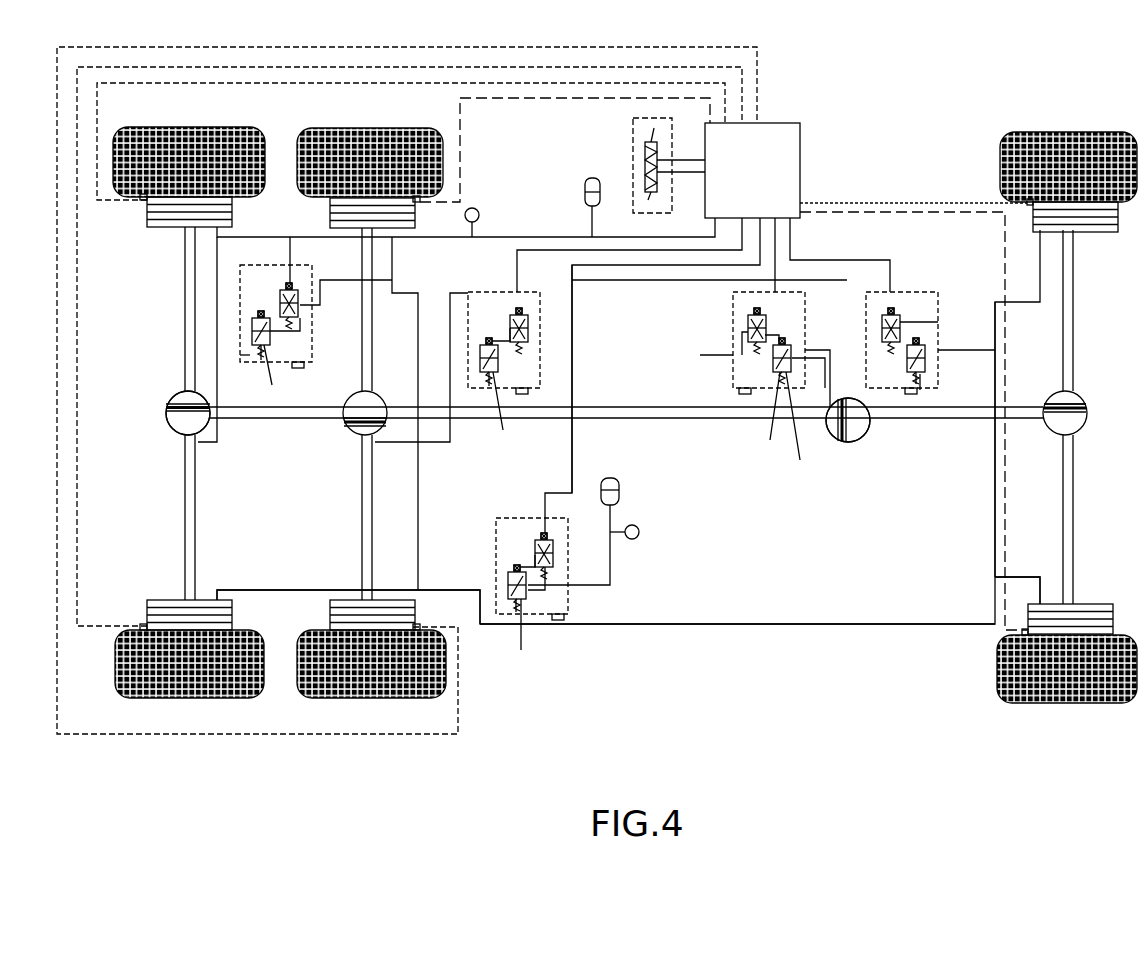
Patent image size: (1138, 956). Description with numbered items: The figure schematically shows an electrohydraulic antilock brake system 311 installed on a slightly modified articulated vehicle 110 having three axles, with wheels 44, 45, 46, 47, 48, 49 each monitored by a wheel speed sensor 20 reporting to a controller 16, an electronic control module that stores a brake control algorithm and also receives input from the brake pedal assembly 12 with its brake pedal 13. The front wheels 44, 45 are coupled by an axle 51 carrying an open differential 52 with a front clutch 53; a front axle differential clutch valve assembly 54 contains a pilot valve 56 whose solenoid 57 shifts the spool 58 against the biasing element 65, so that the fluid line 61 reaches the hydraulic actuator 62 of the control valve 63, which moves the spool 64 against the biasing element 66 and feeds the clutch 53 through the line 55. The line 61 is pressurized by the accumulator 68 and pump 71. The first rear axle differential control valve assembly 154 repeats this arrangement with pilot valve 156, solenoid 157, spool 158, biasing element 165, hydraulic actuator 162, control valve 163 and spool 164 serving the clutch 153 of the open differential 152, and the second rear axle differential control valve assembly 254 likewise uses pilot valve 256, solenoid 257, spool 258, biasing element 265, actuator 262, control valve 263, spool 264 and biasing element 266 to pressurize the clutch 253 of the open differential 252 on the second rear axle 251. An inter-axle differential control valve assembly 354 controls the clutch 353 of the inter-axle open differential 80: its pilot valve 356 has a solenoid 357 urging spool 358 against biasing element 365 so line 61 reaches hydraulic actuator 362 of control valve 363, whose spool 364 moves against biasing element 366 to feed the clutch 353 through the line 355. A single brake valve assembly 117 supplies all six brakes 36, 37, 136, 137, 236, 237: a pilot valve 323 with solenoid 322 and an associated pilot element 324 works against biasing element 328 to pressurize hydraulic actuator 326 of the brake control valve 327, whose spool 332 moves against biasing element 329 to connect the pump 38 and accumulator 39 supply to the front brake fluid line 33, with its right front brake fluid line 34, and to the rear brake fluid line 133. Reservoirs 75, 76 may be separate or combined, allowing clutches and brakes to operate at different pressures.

The brake pedal assembly 12 is at (648, 118).
The brake pedal 13 is at (645, 148).
The controller 16 is at (772, 123).
The wheel speed sensors 20 is at (142, 200).
The front brake fluid line 33 is at (682, 627).
The right front brake fluid line 34 is at (1020, 577).
The right front brake 36 is at (1090, 604).
The left front brake 37 is at (1090, 230).
The pump 38 is at (638, 527).
The accumulator 39 is at (612, 478).
The right front wheel 44 is at (1062, 703).
The left front wheel 45 is at (1083, 132).
The wheel 46 is at (375, 698).
The wheel 47 is at (345, 128).
The wheel 48 is at (190, 698).
The wheel 49 is at (142, 127).
The axle 51 is at (1073, 518).
The open differential 52 is at (1088, 416).
The front clutch 53 is at (1075, 395).
The front axle differential clutch valve assembly 54 is at (898, 288).
The line 55 is at (1005, 356).
The front axle differential clutch pilot valve 56 is at (880, 326).
The solenoid 57 is at (893, 318).
The spool 58 is at (887, 308).
The fluid line 61 is at (618, 282).
The hydraulic actuator 62 is at (920, 345).
The front axle differential clutch control valve 63 is at (933, 353).
The spool 64 is at (922, 374).
The biasing element 65 is at (918, 392).
The biasing element 66 is at (938, 310).
The accumulator 68 is at (586, 180).
The pump 71 is at (478, 210).
The reservoir 75 is at (560, 622).
The reservoir 76 is at (303, 370).
The inter-axle differential 80 is at (872, 428).
The articulated vehicle 110 is at (283, 704).
The single brake valve assembly 117 is at (492, 526).
The rear brake fluid line 133 is at (435, 590).
The rear brake 136 is at (330, 613).
The rear brake 137 is at (330, 213).
The open differential 152 is at (378, 395).
The clutch 153 is at (362, 432).
The first rear axle differential control valve assembly 154 is at (495, 288).
The first rear axle differential pilot valve 156 is at (498, 326).
The solenoid 157 is at (512, 315).
The spool 158 is at (522, 310).
The hydraulic actuator 162 is at (486, 341).
The first rear axle differential clutch control valve 163 is at (470, 357).
The spool 164 is at (497, 385).
The biasing element 165 is at (492, 380).
The rear brake 236 is at (232, 611).
The rear brake 237 is at (232, 211).
The second rear axle 251 is at (185, 512).
The open differential 252 is at (176, 436).
The clutch 253 is at (176, 394).
The second rear axle differential control valve assembly 254 is at (238, 285).
The second rear axle differential clutch pilot valve 256 is at (303, 303).
The solenoid 257 is at (293, 283).
The spool 258 is at (283, 288).
The hydraulic actuator 262 is at (257, 313).
The second rear axle differential clutch control valve 263 is at (250, 330).
The spool 264 is at (268, 364).
The biasing element 265 is at (302, 331).
The biasing element 266 is at (258, 350).
The antilock brake system 311 is at (843, 135).
The solenoid 322 is at (540, 545).
The pilot valve 323 is at (563, 551).
The solenoid 324 is at (549, 534).
The hydraulic actuator 326 is at (514, 568).
The brake control valve 327 is at (498, 578).
The biasing element 328 is at (540, 570).
The biasing element 329 is at (514, 606).
The spool 332 is at (521, 650).
The inter-axle clutch 353 is at (848, 442).
The inter-axle differential control valve assembly 354 is at (728, 348).
The line 355 is at (826, 396).
The inter-axle differential clutch pilot valve 356 is at (774, 328).
The solenoid 357 is at (760, 310).
The spool 358 is at (752, 312).
The hydraulic actuator 362 is at (787, 343).
The inter-axle differential clutch control valve 363 is at (800, 358).
The spool 364 is at (788, 385).
The biasing element 365 is at (752, 345).
The biasing element 366 is at (779, 380).